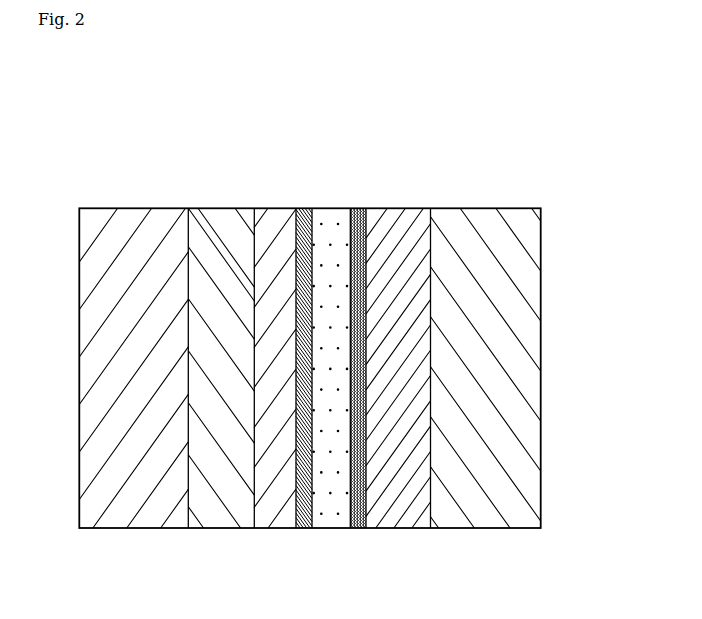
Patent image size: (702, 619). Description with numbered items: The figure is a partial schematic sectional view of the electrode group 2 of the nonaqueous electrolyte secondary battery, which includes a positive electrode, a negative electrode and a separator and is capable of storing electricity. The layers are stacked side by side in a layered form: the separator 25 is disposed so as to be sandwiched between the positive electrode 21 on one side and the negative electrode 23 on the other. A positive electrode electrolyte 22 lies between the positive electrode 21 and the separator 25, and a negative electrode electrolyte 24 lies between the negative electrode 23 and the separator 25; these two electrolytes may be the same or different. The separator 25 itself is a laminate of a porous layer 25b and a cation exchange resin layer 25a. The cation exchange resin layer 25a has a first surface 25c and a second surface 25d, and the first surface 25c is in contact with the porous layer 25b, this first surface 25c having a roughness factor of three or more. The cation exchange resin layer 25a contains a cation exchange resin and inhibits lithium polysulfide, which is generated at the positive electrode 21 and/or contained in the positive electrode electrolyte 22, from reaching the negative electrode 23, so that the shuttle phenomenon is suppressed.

The electrode group 2 is at (487, 119).
The positive electrode 21 is at (137, 218).
The positive electrode electrolyte 22 is at (209, 218).
The negative electrode 23 is at (488, 217).
The negative electrode electrolyte 24 is at (415, 214).
The separator 25 is at (407, 160).
The cation exchange resin layer 25a is at (340, 217).
The porous layer 25b is at (264, 216).
The first surface 25c is at (305, 216).
The second surface 25d is at (364, 217).